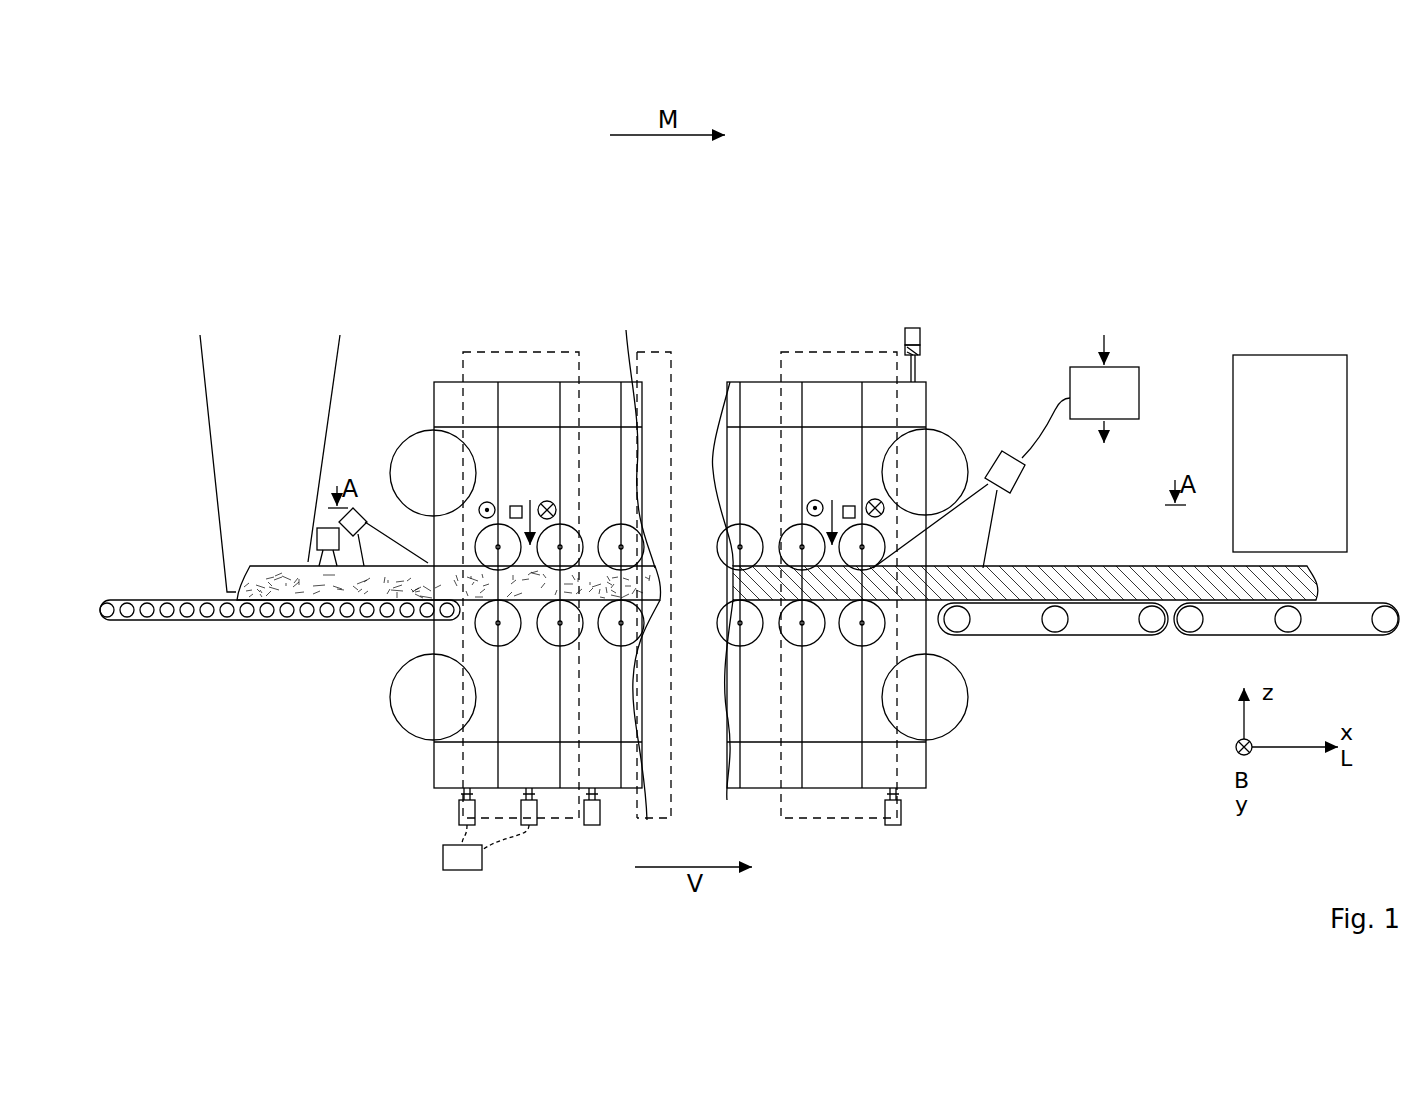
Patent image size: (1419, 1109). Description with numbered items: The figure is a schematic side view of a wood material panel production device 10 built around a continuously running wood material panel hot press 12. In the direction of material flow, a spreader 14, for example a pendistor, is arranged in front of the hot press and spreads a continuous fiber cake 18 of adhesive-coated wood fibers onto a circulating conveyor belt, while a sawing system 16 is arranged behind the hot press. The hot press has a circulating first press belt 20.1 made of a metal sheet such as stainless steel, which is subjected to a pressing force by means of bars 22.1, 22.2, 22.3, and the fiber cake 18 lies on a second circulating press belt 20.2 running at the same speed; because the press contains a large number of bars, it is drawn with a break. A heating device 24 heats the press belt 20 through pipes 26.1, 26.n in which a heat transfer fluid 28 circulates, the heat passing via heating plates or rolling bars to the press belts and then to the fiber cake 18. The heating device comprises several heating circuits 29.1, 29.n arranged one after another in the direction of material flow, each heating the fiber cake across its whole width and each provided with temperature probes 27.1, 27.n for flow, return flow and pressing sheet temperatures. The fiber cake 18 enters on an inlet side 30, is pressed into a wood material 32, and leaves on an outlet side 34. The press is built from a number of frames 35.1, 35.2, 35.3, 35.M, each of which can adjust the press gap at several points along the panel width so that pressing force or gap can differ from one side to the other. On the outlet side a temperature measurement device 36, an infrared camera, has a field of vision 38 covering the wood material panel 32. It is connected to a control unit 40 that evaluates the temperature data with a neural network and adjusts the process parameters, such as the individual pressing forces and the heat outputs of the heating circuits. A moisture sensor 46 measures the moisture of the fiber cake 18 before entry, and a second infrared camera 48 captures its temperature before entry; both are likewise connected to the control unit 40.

The wood material panel production device 10 is at (1250, 250).
The wood material panel hot press 12 is at (740, 216).
The spreader 14 is at (268, 352).
The sawing system 16 is at (1290, 453).
The fiber cake 18 is at (283, 622).
The press belt 20 is at (913, 428).
The first press belt 20.1 is at (442, 428).
The second press belt 20.2 is at (904, 740).
The bar 22.1 is at (490, 567).
The bar 22.2 is at (566, 524).
The bar 22.3 is at (627, 523).
The heating device 24 is at (644, 511).
The pipe 26.1 is at (489, 502).
The pipe 26.n is at (815, 500).
The temperature probe 27.1 is at (516, 505).
The temperature probe 27.n is at (849, 505).
The heat transfer fluid 28 is at (482, 503).
The heating circuit 29.1 is at (461, 350).
The heating circuit 29.n is at (790, 350).
The inlet side 30 is at (352, 656).
The wood material 32 is at (1142, 575).
The outlet side 34 is at (1027, 368).
The frame 35.1 is at (440, 790).
The frame 35.2 is at (537, 822).
The frame 35.3 is at (602, 826).
The frame 35.M is at (888, 824).
The temperature measurement device 36 is at (1002, 451).
The field of vision 38 is at (980, 523).
The control unit 40 is at (1140, 392).
The moisture sensor 46 is at (316, 538).
The second infrared camera 48 is at (345, 510).